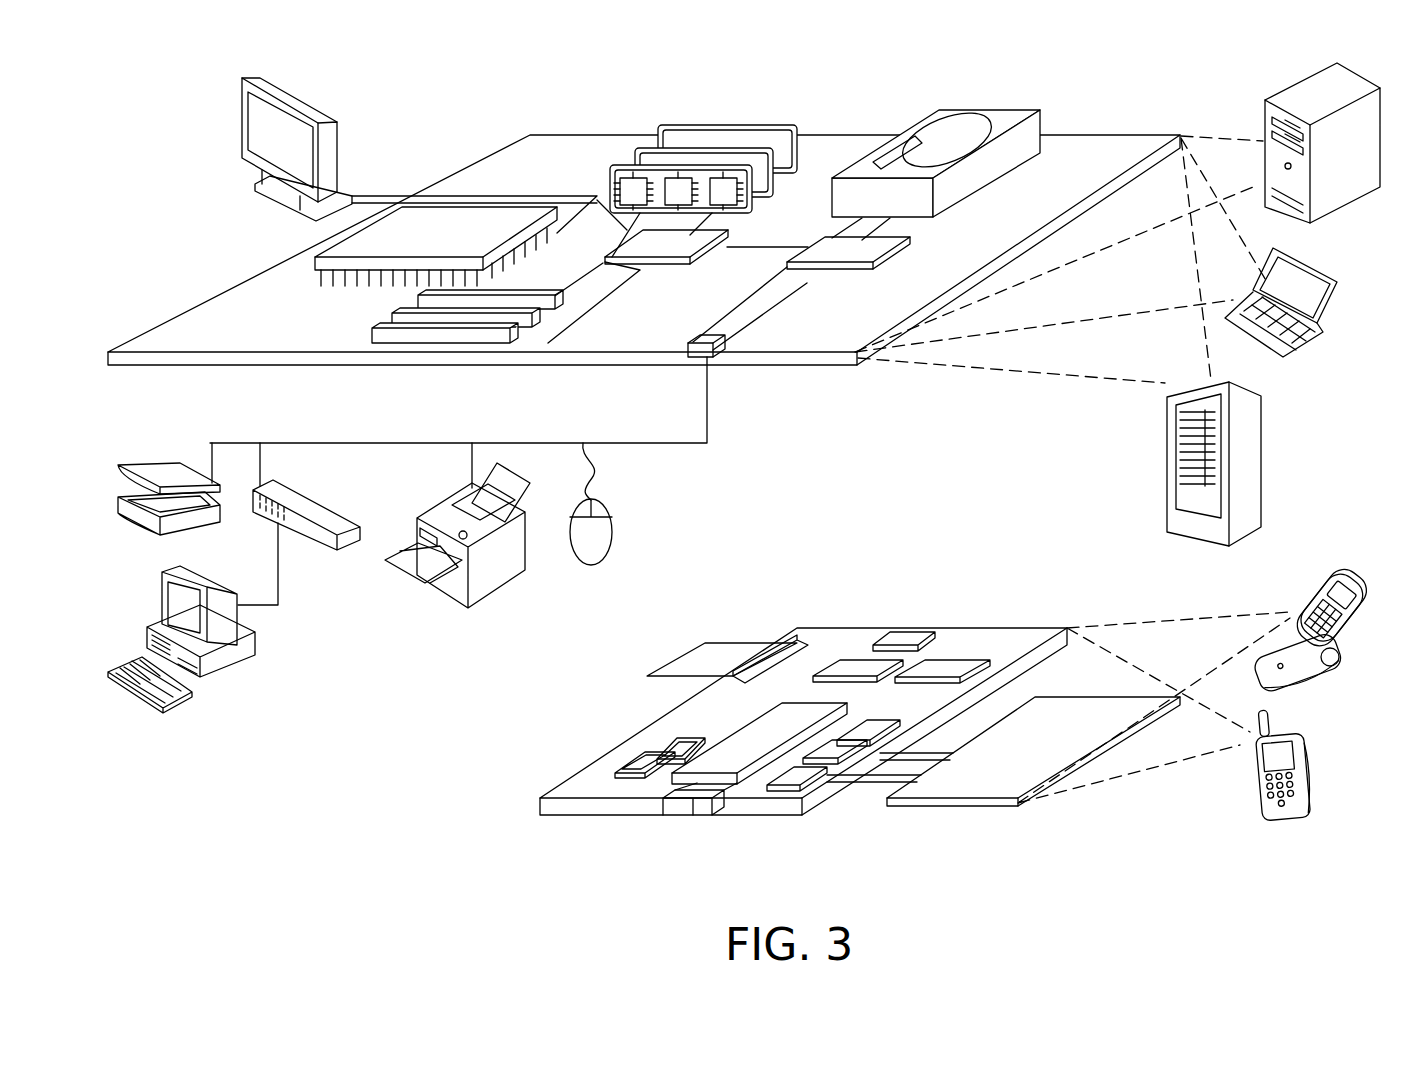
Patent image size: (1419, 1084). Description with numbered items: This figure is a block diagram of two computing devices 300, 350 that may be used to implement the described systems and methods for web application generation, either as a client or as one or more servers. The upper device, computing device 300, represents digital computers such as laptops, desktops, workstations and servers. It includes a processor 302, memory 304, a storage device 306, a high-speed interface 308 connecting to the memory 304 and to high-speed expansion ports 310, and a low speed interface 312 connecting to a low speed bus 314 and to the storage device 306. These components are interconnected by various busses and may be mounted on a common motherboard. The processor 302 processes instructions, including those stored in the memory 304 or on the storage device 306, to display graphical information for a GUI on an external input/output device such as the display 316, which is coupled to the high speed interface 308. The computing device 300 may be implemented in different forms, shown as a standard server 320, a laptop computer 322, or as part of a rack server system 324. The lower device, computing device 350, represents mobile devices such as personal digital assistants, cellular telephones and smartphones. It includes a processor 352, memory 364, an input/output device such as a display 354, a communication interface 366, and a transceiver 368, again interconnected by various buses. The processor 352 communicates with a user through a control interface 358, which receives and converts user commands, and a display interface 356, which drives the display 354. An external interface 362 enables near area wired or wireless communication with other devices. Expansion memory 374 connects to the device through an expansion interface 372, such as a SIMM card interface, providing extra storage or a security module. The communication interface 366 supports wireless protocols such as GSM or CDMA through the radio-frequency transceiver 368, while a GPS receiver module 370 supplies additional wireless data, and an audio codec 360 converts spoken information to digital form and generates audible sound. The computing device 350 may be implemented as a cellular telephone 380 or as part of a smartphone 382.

The computing device 300 is at (453, 107).
The processor 302 is at (287, 261).
The memory 304 is at (674, 126).
The storage device 306 is at (927, 127).
The high-speed interface 308 is at (585, 216).
The high-speed expansion ports 310 is at (387, 323).
The low speed interface 312 is at (826, 252).
The low speed bus 314 is at (723, 355).
The display 316 is at (243, 79).
The standard server 320 is at (1264, 124).
The laptop computer 322 is at (1338, 280).
The rack server system 324 is at (1166, 487).
The computing device 350 is at (513, 812).
The processor 352 is at (730, 775).
The display 354 is at (983, 787).
The display interface 356 is at (805, 792).
The control interface 358 is at (865, 760).
The audio codec 360 is at (870, 730).
The external interface 362 is at (690, 815).
The memory 364 is at (640, 758).
The communication interface 366 is at (860, 667).
The transceiver 368 is at (943, 668).
The GPS receiver module 370 is at (916, 632).
The expansion interface 372 is at (783, 640).
The expansion memory 374 is at (703, 641).
The cellular telephone 380 is at (1303, 588).
The smartphone 382 is at (1255, 770).